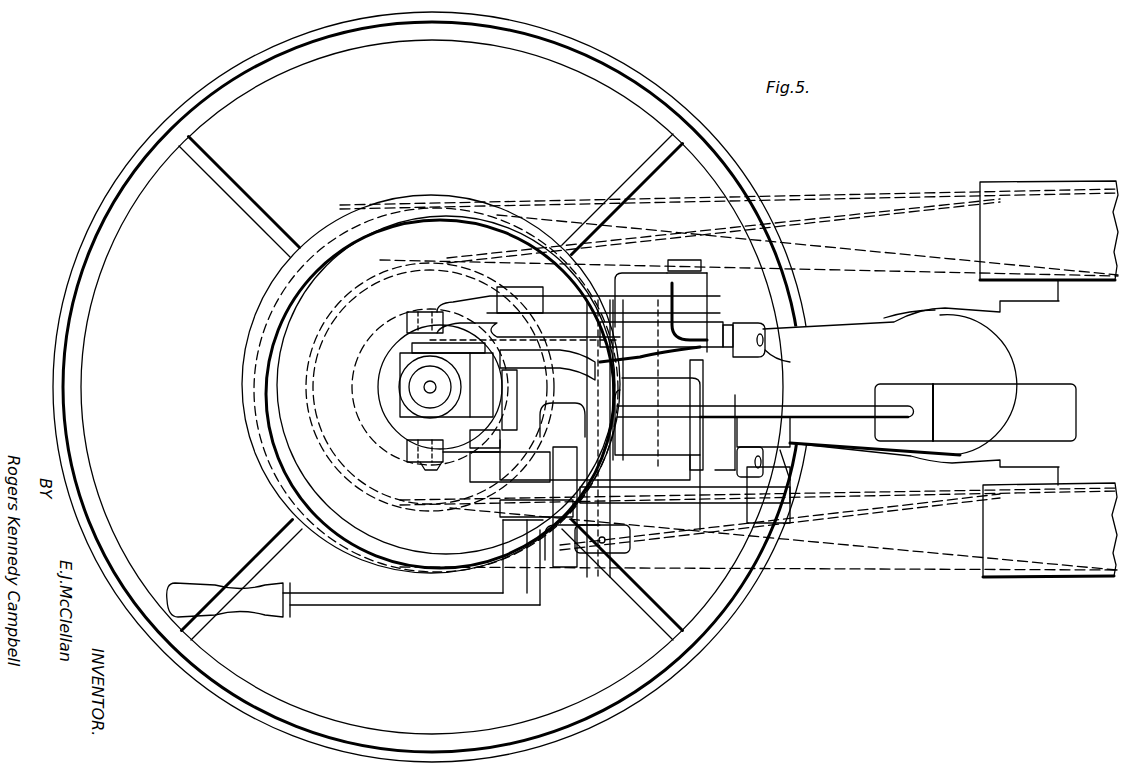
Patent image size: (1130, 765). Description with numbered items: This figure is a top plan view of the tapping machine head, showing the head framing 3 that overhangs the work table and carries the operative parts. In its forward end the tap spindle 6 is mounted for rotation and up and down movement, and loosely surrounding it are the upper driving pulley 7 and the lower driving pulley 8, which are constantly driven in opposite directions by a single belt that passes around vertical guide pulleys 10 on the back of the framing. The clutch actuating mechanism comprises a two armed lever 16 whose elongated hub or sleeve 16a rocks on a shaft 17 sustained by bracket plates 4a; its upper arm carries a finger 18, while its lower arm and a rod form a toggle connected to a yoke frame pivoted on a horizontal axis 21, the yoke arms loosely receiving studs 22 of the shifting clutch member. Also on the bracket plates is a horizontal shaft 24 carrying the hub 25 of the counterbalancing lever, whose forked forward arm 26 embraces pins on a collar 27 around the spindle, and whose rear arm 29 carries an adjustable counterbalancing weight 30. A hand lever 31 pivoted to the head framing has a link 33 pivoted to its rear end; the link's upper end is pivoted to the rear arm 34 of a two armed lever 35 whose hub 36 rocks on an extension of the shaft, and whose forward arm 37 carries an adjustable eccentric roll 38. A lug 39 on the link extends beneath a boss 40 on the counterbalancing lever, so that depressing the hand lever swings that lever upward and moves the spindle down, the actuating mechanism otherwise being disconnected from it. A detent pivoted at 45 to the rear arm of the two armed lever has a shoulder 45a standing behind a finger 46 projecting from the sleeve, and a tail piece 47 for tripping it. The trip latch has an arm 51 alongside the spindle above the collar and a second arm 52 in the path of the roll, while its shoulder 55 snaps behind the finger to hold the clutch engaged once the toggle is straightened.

The head framing 3 is at (911, 378).
The bracket plates 4a is at (612, 330).
The tap spindle 6 is at (426, 389).
The upper driving pulley 7 is at (257, 380).
The lower driving pulley 8 is at (307, 403).
The vertical guide pulley 10 is at (1049, 379).
The two armed lever 16 is at (666, 324).
The hub or sleeve 16a is at (678, 385).
The shaft 17 is at (684, 272).
The finger 18 is at (740, 325).
The horizontal axis 21 is at (520, 492).
The studs 22 is at (437, 312).
The horizontal shaft 24 is at (630, 380).
The hub 25 is at (600, 363).
The forward arm 26 is at (447, 350).
The collar 27 is at (400, 375).
The rear arm 29 is at (765, 400).
The counterbalancing weight 30 is at (975, 412).
The hand lever 31 is at (488, 602).
The link 33 is at (795, 472).
The rear arm 34 is at (685, 496).
The two armed lever 35 is at (565, 507).
The hub 36 is at (620, 520).
The forward arm 37 is at (510, 463).
The roll 38 is at (485, 438).
The lug 39 is at (797, 442).
The boss 40 is at (776, 418).
The pivot 45 is at (740, 476).
The shoulder 45a is at (743, 425).
The finger 46 is at (712, 530).
The tail piece 47 is at (602, 438).
The arm 51 is at (517, 400).
The second arm 52 is at (545, 430).
The shoulder 55 is at (780, 360).